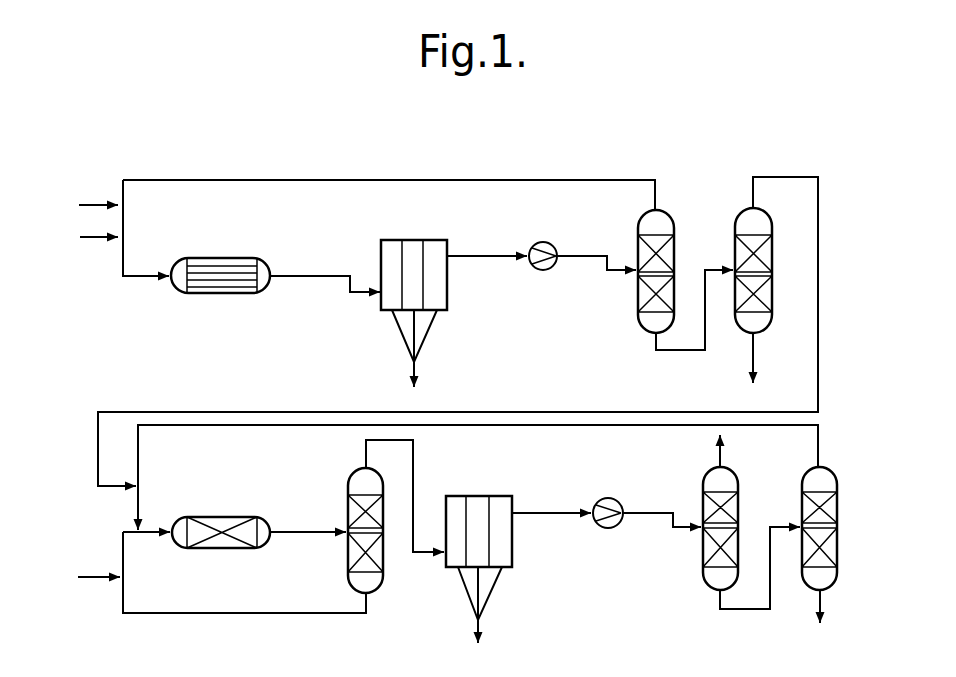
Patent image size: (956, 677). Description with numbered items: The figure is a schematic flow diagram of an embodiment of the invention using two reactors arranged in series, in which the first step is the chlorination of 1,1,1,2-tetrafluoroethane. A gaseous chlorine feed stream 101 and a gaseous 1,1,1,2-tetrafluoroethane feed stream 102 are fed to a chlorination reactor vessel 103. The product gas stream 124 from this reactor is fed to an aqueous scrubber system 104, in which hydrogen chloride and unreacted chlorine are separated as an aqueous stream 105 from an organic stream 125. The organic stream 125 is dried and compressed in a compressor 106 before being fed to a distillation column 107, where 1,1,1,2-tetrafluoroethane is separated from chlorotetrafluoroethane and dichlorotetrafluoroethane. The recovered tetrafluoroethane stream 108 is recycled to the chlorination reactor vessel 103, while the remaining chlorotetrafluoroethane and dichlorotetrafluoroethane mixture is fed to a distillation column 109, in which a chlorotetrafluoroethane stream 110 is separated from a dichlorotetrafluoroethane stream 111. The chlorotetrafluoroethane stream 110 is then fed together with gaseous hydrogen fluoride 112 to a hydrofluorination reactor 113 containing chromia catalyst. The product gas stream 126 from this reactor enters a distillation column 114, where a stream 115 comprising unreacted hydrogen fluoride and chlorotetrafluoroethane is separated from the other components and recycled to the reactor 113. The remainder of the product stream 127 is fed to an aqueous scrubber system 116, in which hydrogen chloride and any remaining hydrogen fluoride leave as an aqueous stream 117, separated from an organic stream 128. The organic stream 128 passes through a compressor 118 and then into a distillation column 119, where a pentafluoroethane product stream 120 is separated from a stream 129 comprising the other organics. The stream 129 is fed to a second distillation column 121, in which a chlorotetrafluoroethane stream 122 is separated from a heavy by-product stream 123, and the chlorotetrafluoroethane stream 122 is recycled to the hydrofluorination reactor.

The gaseous chlorine feed stream 101 is at (95, 203).
The gaseous 1,1,1,2-tetrafluoroethane feed stream 102 is at (88, 240).
The chlorination reactor vessel 103 is at (212, 294).
The aqueous scrubber system 104 is at (437, 292).
The aqueous stream 105 is at (407, 350).
The compressor 106 is at (546, 272).
The distillation column 107 is at (637, 320).
The HFA 134a stream 108 is at (598, 178).
The distillation column 109 is at (738, 212).
The HCFC 124 stream 110 is at (780, 176).
The CFC 114a stream 111 is at (748, 355).
The gaseous hydrogen fluoride 112 is at (88, 580).
The hydrofluorination reactor 113 is at (222, 550).
The distillation column 114 is at (383, 588).
The stream comprising unreacted hydrogen fluoride and HCFC 124 115 is at (283, 614).
The aqueous scrubber system 116 is at (500, 543).
The aqueous stream 117 is at (490, 600).
The compressor 118 is at (615, 525).
The distillation column 119 is at (703, 578).
The pentafluoroethane product stream 120 is at (718, 456).
The second distillation column 121 is at (838, 545).
The HCFC 124 stream 122 is at (818, 437).
The heavy by-product stream 123 is at (824, 598).
The product gas stream 124 is at (326, 274).
The organic stream 125 is at (480, 254).
The product gas stream 126 is at (308, 530).
The remainder of the product stream 127 is at (415, 453).
The organic stream 128 is at (548, 511).
The stream comprising the other organics 129 is at (745, 610).